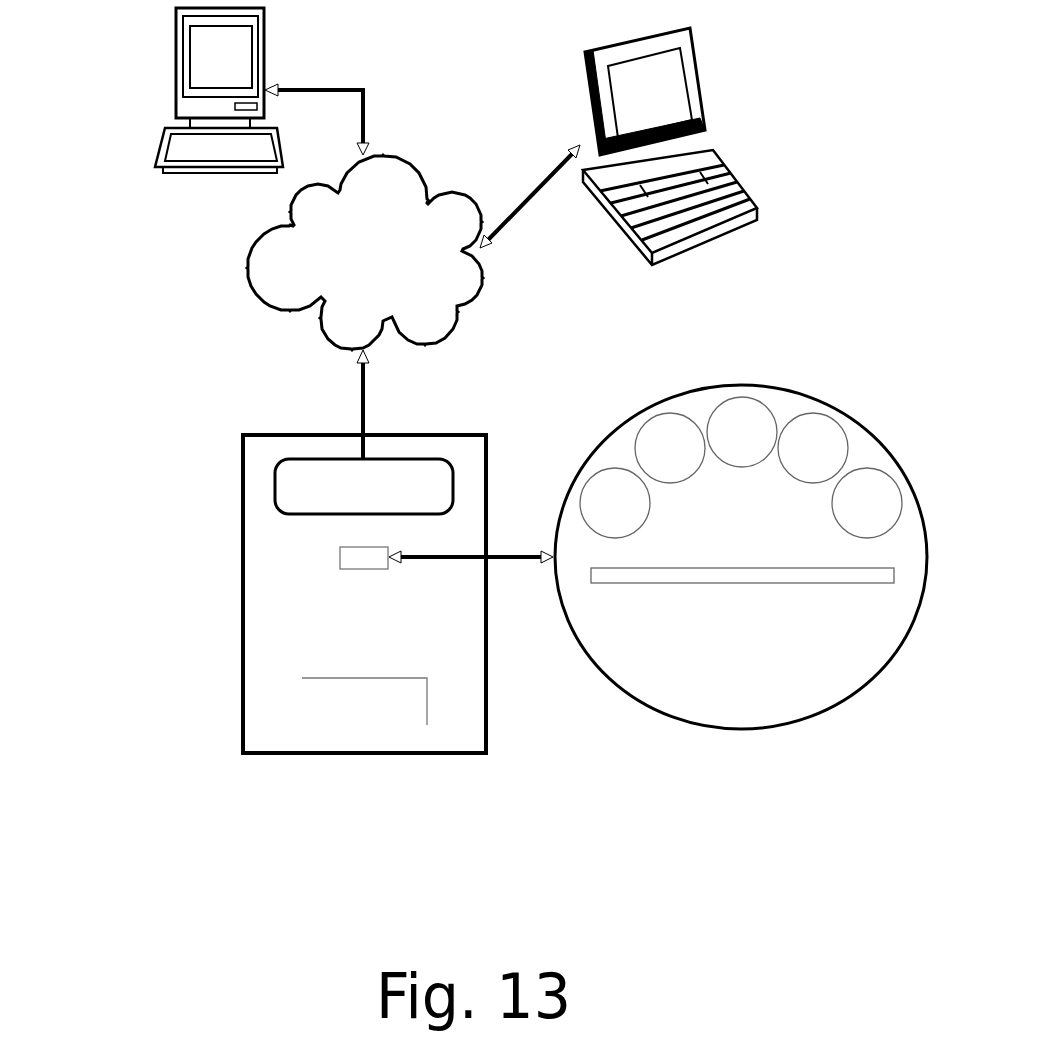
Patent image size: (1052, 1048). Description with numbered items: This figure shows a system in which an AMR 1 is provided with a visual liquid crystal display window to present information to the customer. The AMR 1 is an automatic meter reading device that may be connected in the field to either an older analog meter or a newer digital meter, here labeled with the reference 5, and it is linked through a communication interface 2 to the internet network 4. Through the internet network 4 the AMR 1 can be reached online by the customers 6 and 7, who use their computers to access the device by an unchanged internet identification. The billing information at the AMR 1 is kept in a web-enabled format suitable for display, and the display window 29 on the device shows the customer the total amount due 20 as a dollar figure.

The residential AMR 1 is at (240, 590).
The communication interface 2 is at (275, 488).
The internet network 4 is at (248, 252).
The internet protocol (IP) address 5 is at (742, 728).
The customer 6 is at (717, 147).
The customer 7 is at (176, 90).
The total amount due 20 is at (363, 725).
The display 29 is at (302, 685).